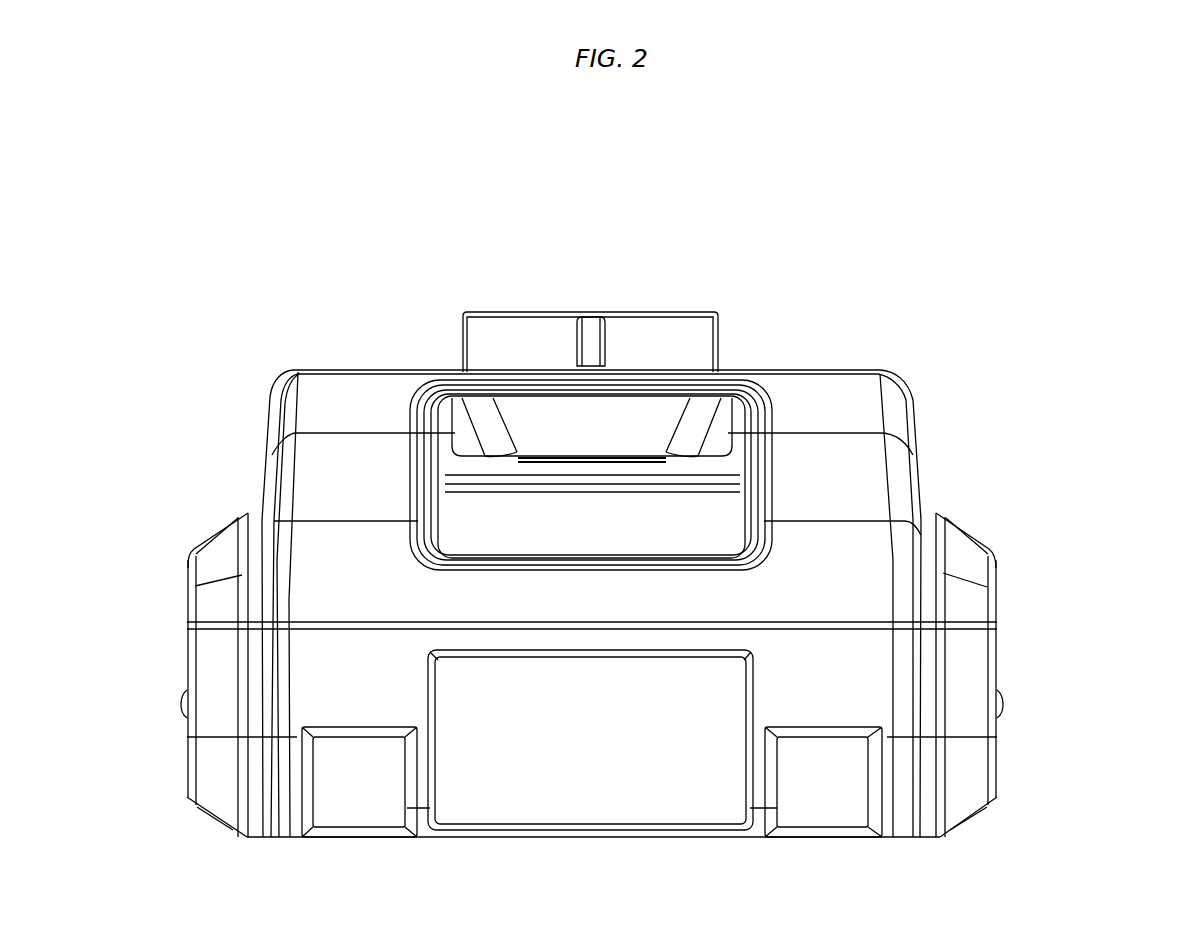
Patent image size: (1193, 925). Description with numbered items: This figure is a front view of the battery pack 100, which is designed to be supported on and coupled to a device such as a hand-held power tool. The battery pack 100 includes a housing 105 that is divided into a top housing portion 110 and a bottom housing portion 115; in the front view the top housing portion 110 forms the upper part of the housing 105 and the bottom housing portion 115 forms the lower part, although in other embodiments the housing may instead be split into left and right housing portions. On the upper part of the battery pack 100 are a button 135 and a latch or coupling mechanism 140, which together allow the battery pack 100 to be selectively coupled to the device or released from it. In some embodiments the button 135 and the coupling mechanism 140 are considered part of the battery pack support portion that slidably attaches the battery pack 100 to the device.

The battery pack 100 is at (1088, 216).
The housing 105 is at (1038, 423).
The top housing portion 110 is at (266, 420).
The bottom housing portion 115 is at (996, 778).
The button 135 is at (757, 388).
The coupling mechanism 140 is at (652, 311).